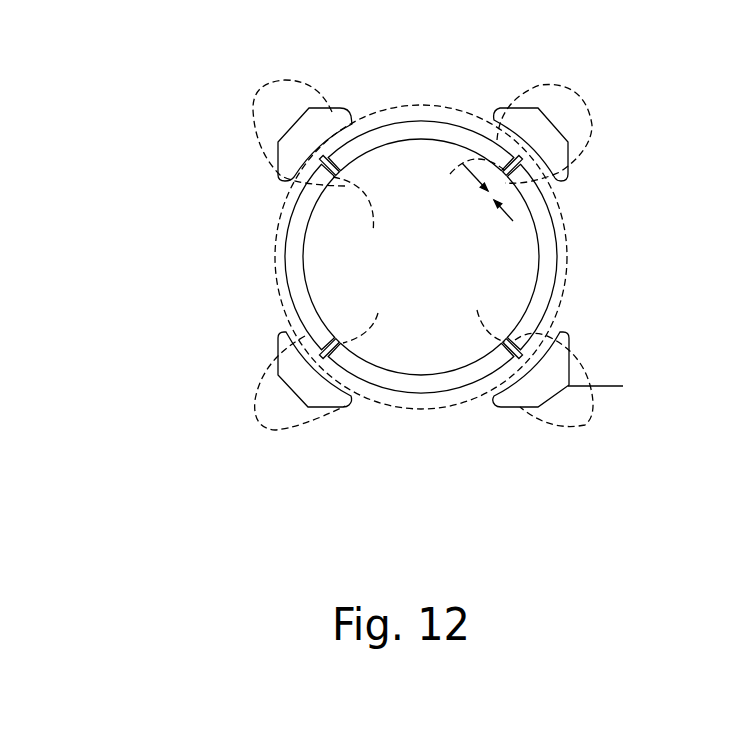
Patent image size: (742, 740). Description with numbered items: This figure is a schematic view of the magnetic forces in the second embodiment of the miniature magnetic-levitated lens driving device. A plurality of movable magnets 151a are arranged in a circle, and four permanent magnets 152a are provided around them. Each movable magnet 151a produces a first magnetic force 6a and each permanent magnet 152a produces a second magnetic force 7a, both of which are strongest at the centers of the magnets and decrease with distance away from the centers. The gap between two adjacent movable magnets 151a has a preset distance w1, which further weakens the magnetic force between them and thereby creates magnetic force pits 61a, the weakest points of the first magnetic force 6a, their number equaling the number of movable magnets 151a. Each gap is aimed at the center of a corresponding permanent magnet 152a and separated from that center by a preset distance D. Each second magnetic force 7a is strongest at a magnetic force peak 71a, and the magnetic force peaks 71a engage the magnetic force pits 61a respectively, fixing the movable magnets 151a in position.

The first magnetic force 6a is at (277, 250).
The movable magnet 151a is at (465, 130).
The permanent magnet 152a is at (343, 116).
The magnetic force peak 71a is at (330, 178).
The magnetic force pit 61a is at (420, 251).
The second magnetic force 7a is at (253, 105).
The preset distance w1 is at (485, 194).
The preset distance D is at (595, 374).